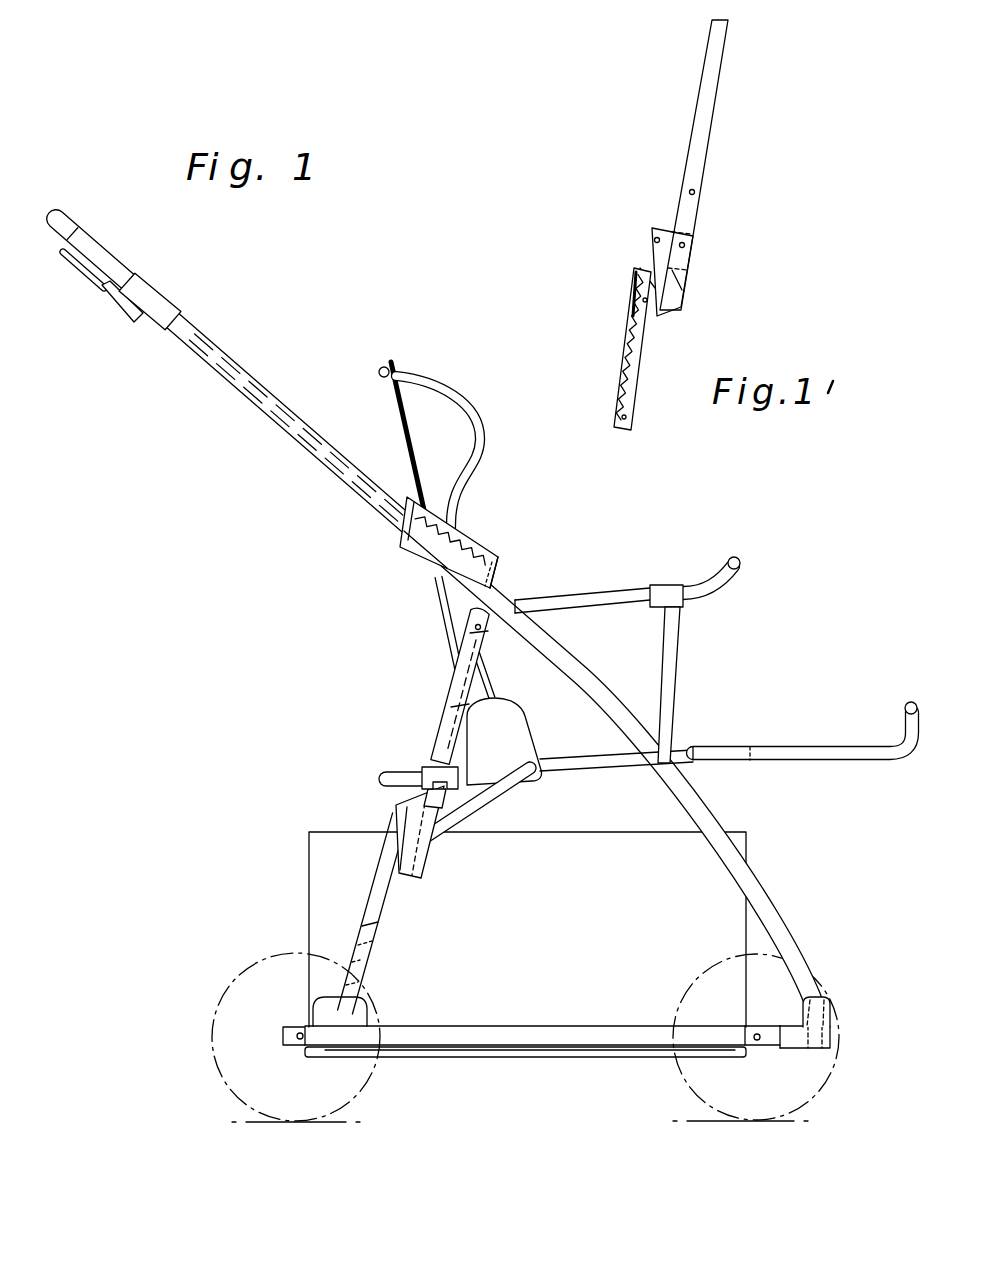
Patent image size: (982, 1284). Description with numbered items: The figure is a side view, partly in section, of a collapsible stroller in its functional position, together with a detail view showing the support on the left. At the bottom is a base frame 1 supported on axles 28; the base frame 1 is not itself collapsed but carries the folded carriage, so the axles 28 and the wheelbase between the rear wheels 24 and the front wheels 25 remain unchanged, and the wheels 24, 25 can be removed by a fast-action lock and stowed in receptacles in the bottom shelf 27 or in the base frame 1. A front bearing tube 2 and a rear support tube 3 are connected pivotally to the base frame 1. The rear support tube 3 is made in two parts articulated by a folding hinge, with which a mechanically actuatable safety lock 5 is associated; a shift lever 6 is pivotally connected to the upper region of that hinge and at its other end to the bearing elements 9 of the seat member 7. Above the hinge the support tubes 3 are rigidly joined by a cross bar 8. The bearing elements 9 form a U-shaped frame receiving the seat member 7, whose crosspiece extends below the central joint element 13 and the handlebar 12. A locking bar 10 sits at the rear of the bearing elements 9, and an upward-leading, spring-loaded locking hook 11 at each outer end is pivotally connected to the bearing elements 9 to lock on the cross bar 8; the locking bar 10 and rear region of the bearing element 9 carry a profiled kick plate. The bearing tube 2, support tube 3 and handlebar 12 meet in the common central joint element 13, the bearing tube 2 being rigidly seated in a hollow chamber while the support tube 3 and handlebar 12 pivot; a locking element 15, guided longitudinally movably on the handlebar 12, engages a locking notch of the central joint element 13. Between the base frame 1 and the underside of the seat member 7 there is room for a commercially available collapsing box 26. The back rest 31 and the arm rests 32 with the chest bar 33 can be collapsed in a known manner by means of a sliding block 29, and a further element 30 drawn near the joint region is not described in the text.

In FIG. 1, the base frame 1 is at (547, 1026).
In FIG. 1', the base frame 1 is at (692, 262).
In FIG. 1, the front bearing tube 2 is at (777, 928).
In FIG. 1, the rear support tube 3 is at (460, 690).
In FIG. 1', the rear support tube 3 is at (715, 65).
In FIG. 1', the safety lock 5 is at (676, 308).
In FIG. 1, the shift lever 6 is at (492, 793).
In FIG. 1, the seat member 7 is at (610, 767).
In FIG. 1, the cross bar 8 is at (423, 793).
In FIG. 1', the cross bar 8 is at (695, 192).
In FIG. 1, the bearing element 9 is at (584, 772).
In FIG. 1, the locking bar 10 is at (396, 810).
In FIG. 1, the locking hook 11 is at (437, 757).
In FIG. 1, the handlebar 12 is at (264, 392).
In FIG. 1, the central joint element 13 is at (500, 578).
In FIG. 1, the locking element 15 is at (398, 542).
In FIG. 1, the rear wheel 24 is at (227, 1085).
In FIG. 1, the front wheel 25 is at (805, 1077).
In FIG. 1, the collapsing box 26 is at (703, 885).
In FIG. 1, the bottom shelf 27 is at (547, 1058).
In FIG. 1, the axle 28 is at (300, 1031).
In FIG. 1, the sliding block 29 is at (513, 736).
In FIG. 1, the hinge 30 is at (423, 765).
In FIG. 1, the back rest 31 is at (412, 425).
In FIG. 1, the arm rest 32 is at (605, 598).
In FIG. 1, the chest bar 33 is at (736, 556).